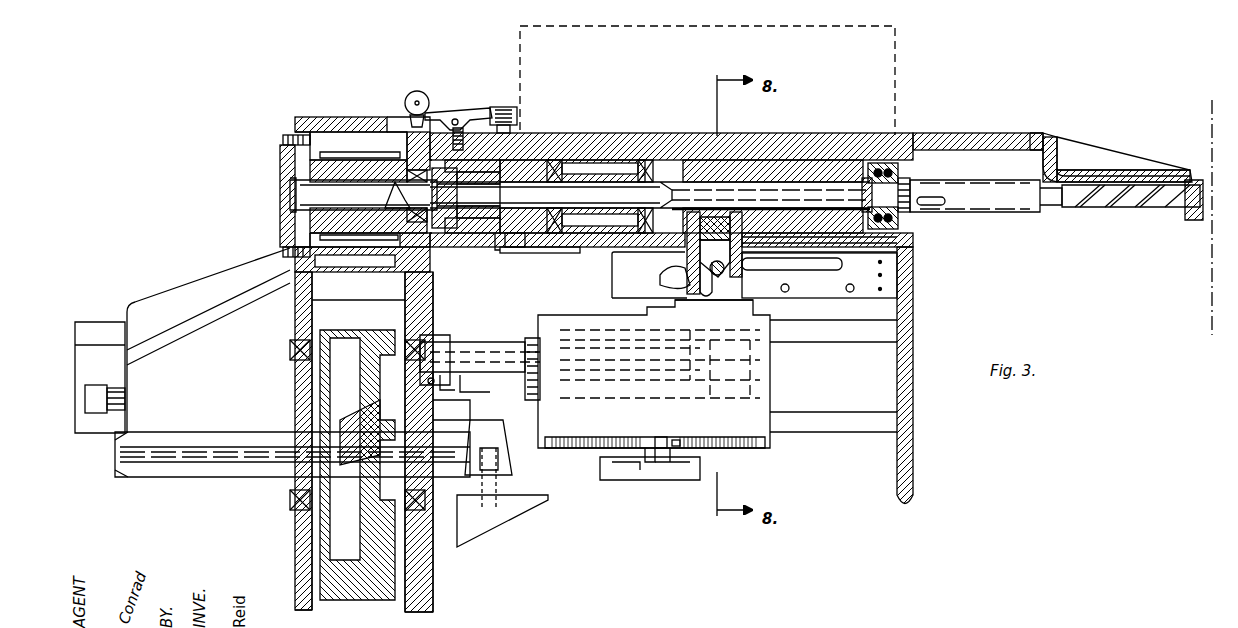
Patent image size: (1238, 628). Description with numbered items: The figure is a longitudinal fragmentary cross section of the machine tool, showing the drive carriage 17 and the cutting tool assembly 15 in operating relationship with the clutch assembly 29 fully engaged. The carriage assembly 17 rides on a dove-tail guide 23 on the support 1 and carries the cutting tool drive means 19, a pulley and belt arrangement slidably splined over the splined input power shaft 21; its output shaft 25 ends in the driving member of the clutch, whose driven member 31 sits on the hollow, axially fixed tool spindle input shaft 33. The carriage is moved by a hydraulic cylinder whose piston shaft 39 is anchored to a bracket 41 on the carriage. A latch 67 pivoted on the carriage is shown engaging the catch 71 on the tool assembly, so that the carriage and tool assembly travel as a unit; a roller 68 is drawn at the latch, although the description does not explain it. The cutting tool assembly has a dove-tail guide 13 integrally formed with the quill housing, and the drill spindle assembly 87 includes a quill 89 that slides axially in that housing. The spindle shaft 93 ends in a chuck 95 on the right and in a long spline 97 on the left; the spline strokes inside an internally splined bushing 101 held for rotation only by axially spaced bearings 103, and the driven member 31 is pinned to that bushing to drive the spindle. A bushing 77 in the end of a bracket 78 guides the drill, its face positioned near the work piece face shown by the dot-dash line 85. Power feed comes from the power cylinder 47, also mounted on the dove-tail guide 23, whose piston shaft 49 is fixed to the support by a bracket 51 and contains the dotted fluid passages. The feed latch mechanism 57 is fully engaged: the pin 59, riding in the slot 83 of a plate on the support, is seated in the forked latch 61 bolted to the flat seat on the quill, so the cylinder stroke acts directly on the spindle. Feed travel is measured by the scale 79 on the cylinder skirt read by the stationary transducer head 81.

The support 1 is at (913, 482).
The dove-tail guide 13 is at (808, 147).
The cutting tool assembly 15 is at (845, 145).
The carriage assembly 17 is at (280, 190).
The cutting tool drive means 19 is at (362, 575).
The splined input power shaft 21 is at (215, 477).
The dove-tail guide 23 is at (95, 330).
The output shaft 25 is at (360, 205).
The clutch assembly 29 is at (455, 228).
The driven member 31 is at (485, 233).
The tool spindle input shaft 33 is at (532, 240).
The piston shaft 39 is at (96, 413).
The bracket 41 is at (165, 315).
The power cylinder 47 is at (770, 388).
The piston shaft 49 is at (490, 345).
The bracket 51 is at (440, 340).
The latch mechanism 57 is at (685, 258).
The pin 59 is at (722, 280).
The latch 61 is at (745, 243).
The latch 67 is at (462, 117).
The roller 68 is at (420, 92).
The catch 71 is at (500, 108).
The bushing 77 is at (1197, 180).
The bracket 78 is at (1092, 148).
The scale 79 is at (740, 450).
The electromagnetic transducer head 81 is at (666, 440).
The slot 83 is at (840, 266).
The work piece face 85 is at (1212, 310).
The drill spindle assembly 87 is at (938, 208).
The quill 89 is at (858, 163).
The shaft 93 is at (820, 185).
The chuck 95 is at (943, 185).
The spline 97 is at (612, 190).
The internally splined bushing 101 is at (583, 160).
The bearings 103 is at (553, 160).